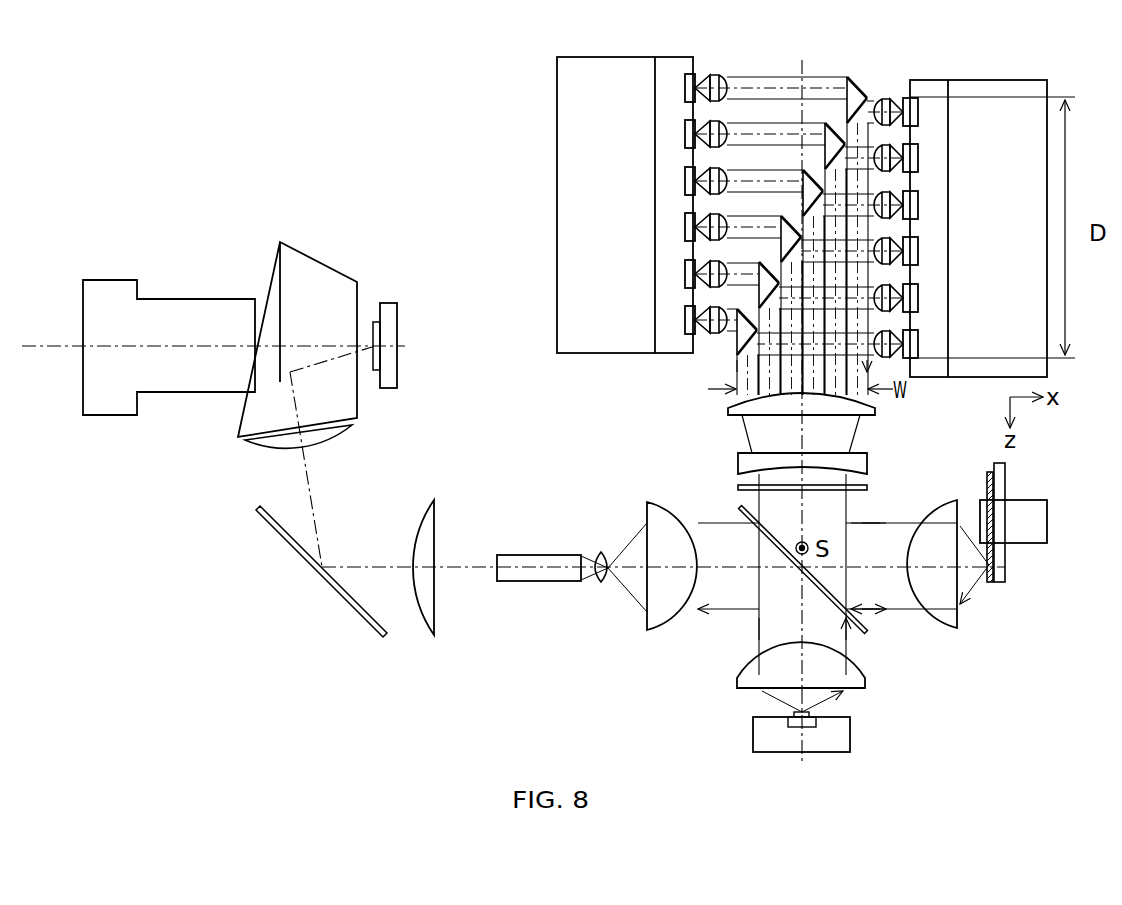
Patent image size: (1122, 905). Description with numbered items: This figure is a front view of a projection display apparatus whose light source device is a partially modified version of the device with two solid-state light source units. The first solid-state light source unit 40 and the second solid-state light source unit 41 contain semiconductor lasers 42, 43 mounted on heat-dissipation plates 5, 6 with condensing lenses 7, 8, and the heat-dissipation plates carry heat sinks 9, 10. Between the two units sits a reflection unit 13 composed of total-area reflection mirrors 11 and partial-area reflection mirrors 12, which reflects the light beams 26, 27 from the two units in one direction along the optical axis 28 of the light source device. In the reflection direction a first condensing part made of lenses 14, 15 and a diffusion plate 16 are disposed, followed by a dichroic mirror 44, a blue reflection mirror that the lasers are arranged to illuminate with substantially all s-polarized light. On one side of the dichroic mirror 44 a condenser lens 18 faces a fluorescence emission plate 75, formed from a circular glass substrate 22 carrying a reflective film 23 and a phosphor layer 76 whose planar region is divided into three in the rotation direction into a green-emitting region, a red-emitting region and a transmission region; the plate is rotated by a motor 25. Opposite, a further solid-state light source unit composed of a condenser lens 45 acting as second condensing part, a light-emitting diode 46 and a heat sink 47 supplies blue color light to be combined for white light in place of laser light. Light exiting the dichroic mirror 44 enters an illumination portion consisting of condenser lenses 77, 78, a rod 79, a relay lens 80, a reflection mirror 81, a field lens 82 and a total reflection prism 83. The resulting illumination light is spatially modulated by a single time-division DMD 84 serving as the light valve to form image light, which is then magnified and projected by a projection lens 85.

The heat-dissipation plate 5 is at (672, 345).
The heat-dissipation plate 6 is at (940, 90).
The condensing lens 7 is at (713, 332).
The condensing lens 8 is at (887, 201).
The heat sink 9 is at (590, 353).
The heat sink 10 is at (990, 80).
The total-area reflection mirror 11 is at (847, 77).
The partial-area reflection mirror 12 is at (849, 113).
The reflection unit 13 is at (802, 181).
The lens 14 is at (875, 409).
The lens 15 is at (867, 460).
The diffusion plate 16 is at (867, 487).
The condenser lens 18 is at (957, 628).
The glass substrate 22 is at (1002, 583).
The reflective film 23 is at (986, 579).
The motor 25 is at (1019, 543).
The light beam 26 is at (750, 78).
The light beam 27 is at (872, 100).
The optical axis 28 is at (800, 757).
The first solid-state light source unit 40 is at (683, 262).
The second solid-state light source unit 41 is at (919, 180).
The semiconductor laser 42 is at (693, 343).
The semiconductor laser 43 is at (904, 100).
The dichroic mirror 44 is at (867, 630).
The condenser lens 45 is at (865, 683).
The light-emitting diode 46 is at (794, 714).
The heat sink 47 is at (850, 735).
The fluorescence emission plate 75 is at (1005, 576).
The phosphor layer 76 is at (990, 583).
The condenser lens 77 is at (651, 631).
The condenser lens 78 is at (600, 583).
The rod 79 is at (542, 582).
The relay lens 80 is at (434, 636).
The reflection mirror 81 is at (262, 512).
The field lens 82 is at (252, 440).
The total reflection prism 83 is at (320, 262).
The DMD 84 is at (383, 303).
The projection lens 85 is at (108, 280).